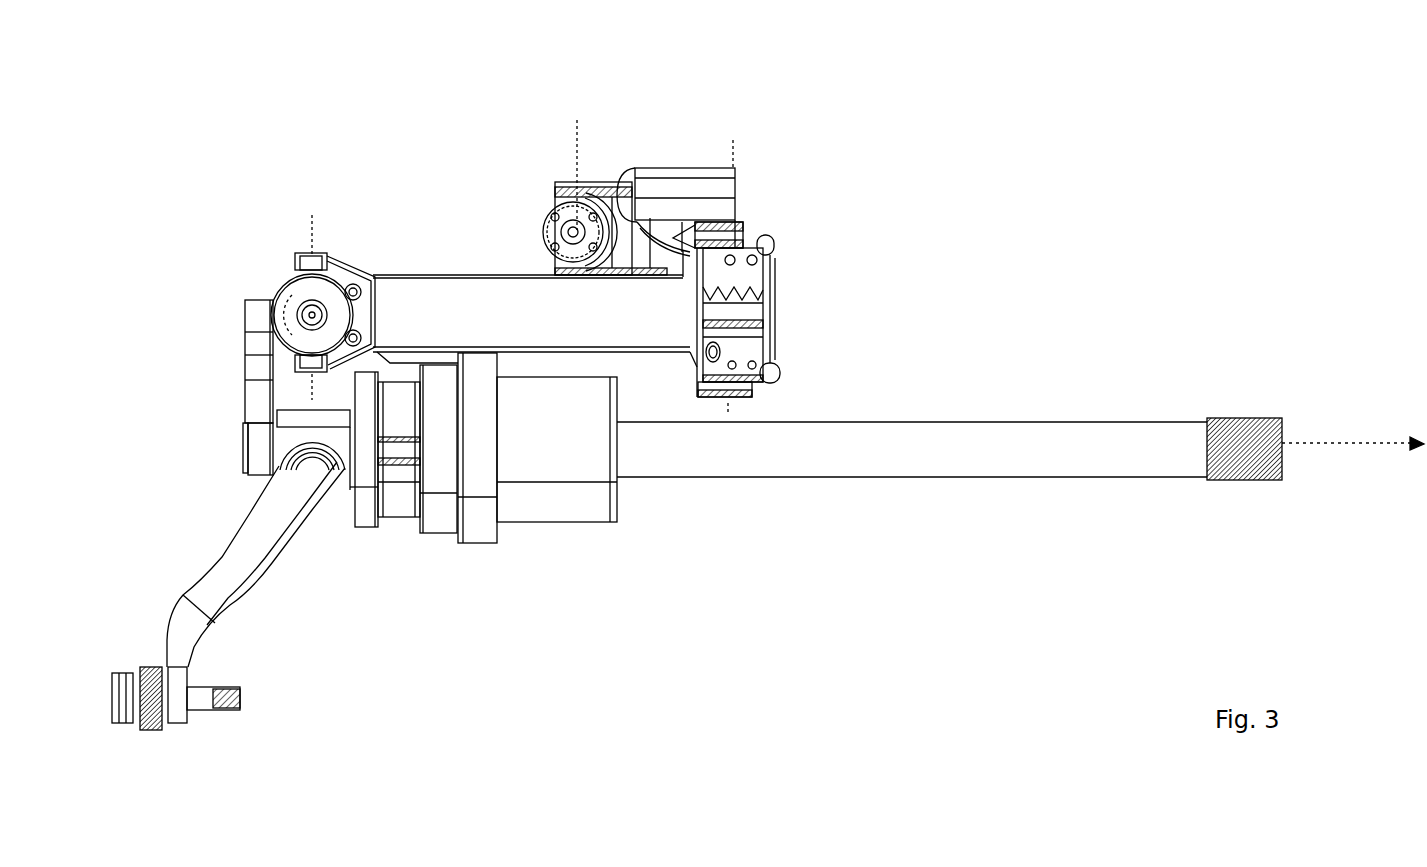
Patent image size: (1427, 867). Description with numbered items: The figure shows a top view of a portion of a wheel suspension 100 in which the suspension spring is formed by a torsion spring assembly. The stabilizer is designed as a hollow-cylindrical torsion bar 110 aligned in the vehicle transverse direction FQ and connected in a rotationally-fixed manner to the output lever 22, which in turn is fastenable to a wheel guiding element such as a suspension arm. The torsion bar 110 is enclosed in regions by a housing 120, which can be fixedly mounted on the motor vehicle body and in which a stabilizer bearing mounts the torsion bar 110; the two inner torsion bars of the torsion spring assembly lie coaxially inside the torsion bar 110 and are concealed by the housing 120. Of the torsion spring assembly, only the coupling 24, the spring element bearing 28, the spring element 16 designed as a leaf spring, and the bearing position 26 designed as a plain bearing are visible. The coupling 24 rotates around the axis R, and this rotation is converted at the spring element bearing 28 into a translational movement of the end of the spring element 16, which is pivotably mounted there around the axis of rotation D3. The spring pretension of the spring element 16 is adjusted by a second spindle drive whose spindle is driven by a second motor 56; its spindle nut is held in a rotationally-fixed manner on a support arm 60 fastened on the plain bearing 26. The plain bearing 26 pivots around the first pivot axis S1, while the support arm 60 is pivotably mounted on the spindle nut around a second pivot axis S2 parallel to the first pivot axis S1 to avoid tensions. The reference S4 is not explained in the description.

The wheel suspension 100 is at (240, 129).
The spring element 16 is at (481, 293).
The spring element bearing 28 is at (262, 265).
The axis of rotation D3 is at (312, 294).
The coupling 24 is at (245, 372).
The output lever 22 is at (245, 555).
The sensor S4 is at (548, 215).
The second pivot axis S2 is at (575, 130).
The support arm 60 is at (700, 197).
The second motor 56 is at (627, 197).
The first pivot axis S1 is at (733, 145).
The bearing position 26 is at (767, 343).
The housing 120 is at (547, 473).
The torsion bar 110 is at (848, 445).
The axis R is at (1312, 443).
The vehicle transverse direction FQ is at (1353, 432).